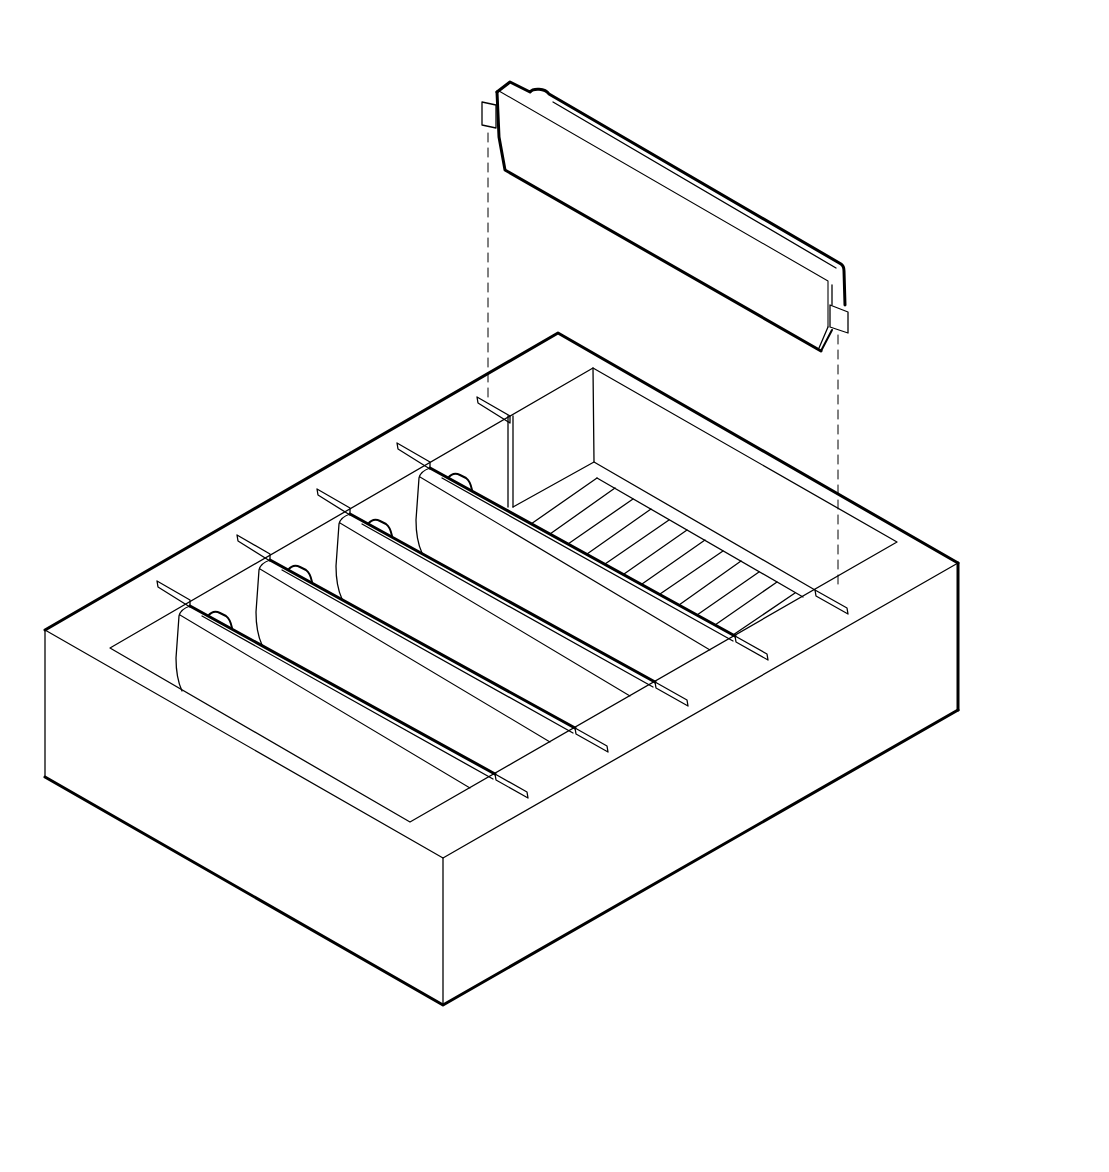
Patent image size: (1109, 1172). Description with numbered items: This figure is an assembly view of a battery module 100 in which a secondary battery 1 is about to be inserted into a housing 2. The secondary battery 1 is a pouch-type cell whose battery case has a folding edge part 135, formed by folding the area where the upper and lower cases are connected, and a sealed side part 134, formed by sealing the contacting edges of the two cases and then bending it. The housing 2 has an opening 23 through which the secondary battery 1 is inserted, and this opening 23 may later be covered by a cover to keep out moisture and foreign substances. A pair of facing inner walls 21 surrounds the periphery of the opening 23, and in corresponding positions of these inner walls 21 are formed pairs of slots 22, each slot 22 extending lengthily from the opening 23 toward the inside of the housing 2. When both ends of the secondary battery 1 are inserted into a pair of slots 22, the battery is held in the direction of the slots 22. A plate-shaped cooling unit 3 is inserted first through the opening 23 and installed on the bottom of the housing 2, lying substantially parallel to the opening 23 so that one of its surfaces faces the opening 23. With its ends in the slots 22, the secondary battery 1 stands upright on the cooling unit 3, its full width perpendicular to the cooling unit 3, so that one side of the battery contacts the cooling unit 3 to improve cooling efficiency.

The battery module 100 is at (845, 90).
The secondary battery 1 is at (690, 160).
The sealed side part 134 is at (632, 158).
The folding edge part 135 is at (662, 264).
The housing 2 is at (690, 845).
The inner walls 21 is at (548, 427).
The slots 22 is at (477, 397).
The opening 23 is at (794, 525).
The cooling unit 3 is at (700, 575).